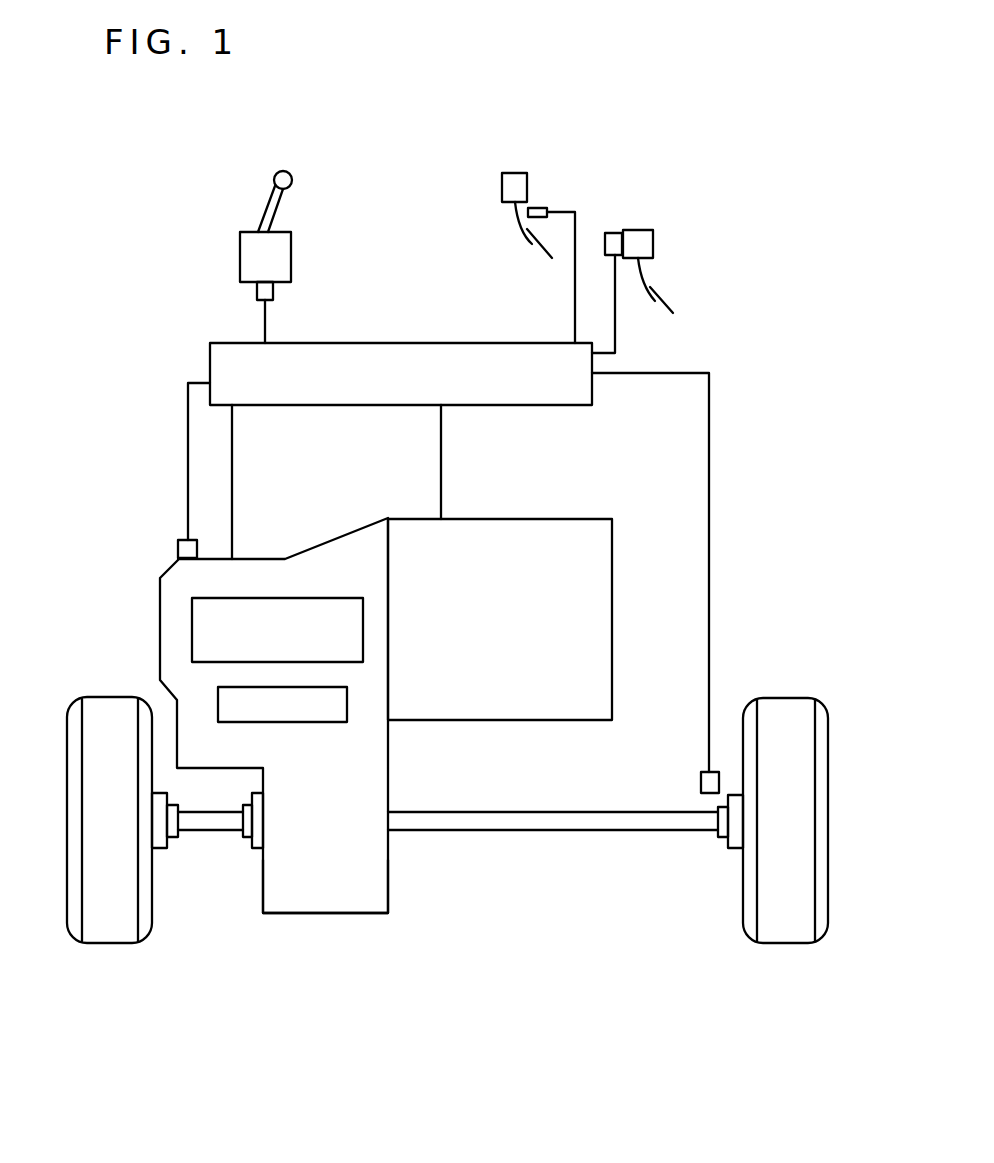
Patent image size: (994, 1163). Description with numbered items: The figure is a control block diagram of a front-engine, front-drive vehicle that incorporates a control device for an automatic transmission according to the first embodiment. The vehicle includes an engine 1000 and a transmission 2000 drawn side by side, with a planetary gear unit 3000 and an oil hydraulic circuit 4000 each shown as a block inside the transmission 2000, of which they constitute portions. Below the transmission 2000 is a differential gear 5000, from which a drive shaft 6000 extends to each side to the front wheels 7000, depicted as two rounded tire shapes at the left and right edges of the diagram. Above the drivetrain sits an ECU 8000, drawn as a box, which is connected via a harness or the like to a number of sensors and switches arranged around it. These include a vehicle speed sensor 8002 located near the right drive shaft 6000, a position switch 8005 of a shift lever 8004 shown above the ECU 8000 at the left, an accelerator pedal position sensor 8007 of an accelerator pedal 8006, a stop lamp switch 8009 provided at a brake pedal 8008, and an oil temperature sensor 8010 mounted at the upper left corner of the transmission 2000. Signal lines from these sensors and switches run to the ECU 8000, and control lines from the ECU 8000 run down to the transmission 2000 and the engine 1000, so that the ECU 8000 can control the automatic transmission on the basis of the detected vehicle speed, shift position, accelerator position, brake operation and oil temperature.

The engine 1000 is at (518, 518).
The transmission 2000 is at (257, 558).
The planetary gear unit 3000 is at (282, 598).
The oil hydraulic circuit 4000 is at (310, 723).
The differential gear 5000 is at (325, 915).
The drive shaft 6000 is at (208, 833).
The front wheels 7000 is at (107, 697).
The ECU 8000 is at (480, 343).
The vehicle speed sensor 8002 is at (700, 776).
The shift lever 8004 is at (282, 197).
The position switch 8005 is at (256, 293).
The accelerator pedal 8006 is at (645, 273).
The accelerator pedal position sensor 8007 is at (613, 233).
The brake pedal 8008 is at (523, 238).
The stop lamp switch 8009 is at (540, 208).
The oil temperature sensor 8010 is at (177, 550).